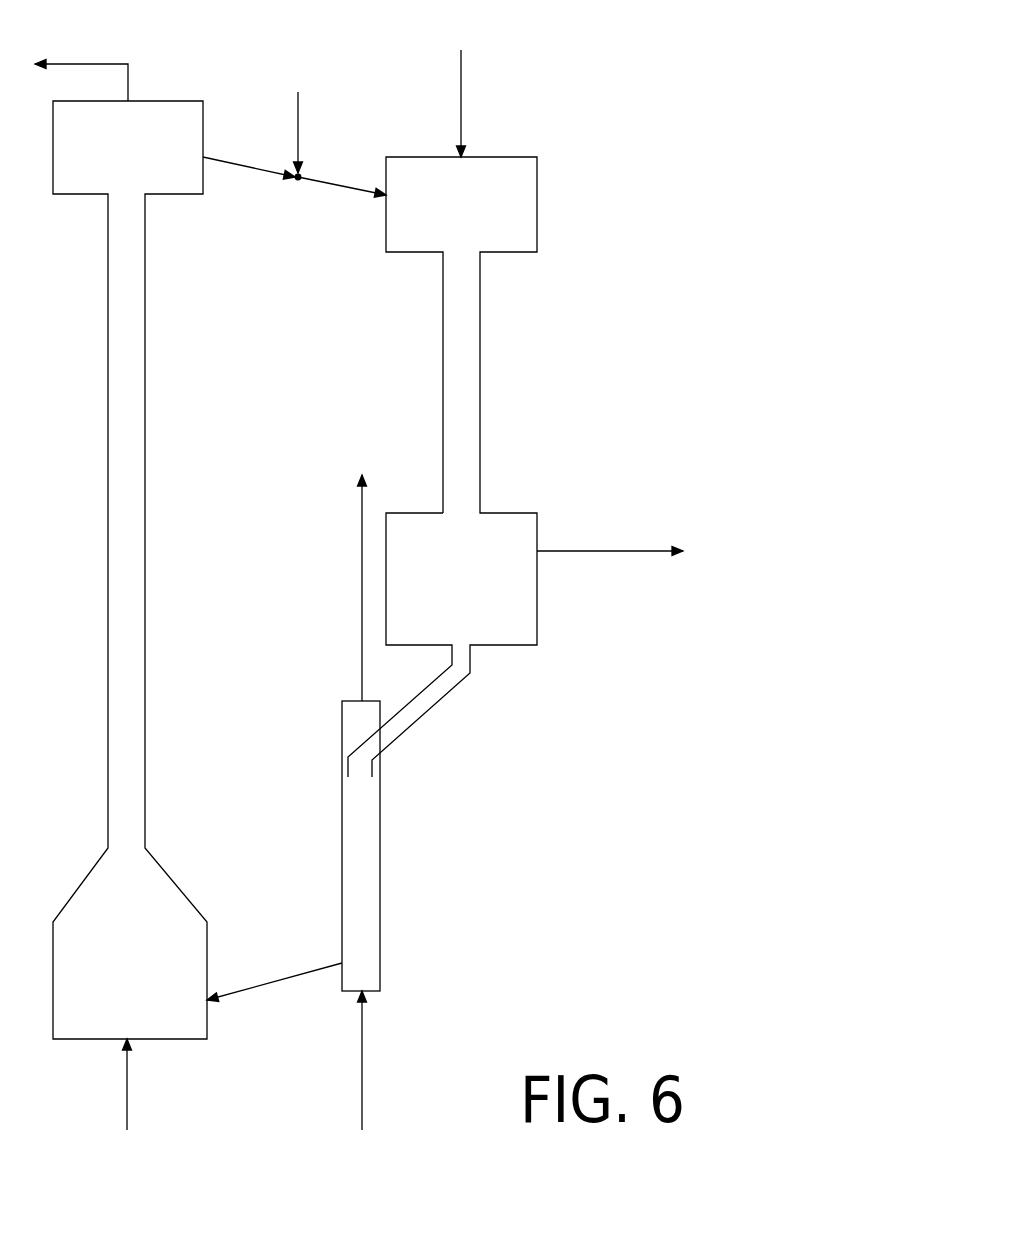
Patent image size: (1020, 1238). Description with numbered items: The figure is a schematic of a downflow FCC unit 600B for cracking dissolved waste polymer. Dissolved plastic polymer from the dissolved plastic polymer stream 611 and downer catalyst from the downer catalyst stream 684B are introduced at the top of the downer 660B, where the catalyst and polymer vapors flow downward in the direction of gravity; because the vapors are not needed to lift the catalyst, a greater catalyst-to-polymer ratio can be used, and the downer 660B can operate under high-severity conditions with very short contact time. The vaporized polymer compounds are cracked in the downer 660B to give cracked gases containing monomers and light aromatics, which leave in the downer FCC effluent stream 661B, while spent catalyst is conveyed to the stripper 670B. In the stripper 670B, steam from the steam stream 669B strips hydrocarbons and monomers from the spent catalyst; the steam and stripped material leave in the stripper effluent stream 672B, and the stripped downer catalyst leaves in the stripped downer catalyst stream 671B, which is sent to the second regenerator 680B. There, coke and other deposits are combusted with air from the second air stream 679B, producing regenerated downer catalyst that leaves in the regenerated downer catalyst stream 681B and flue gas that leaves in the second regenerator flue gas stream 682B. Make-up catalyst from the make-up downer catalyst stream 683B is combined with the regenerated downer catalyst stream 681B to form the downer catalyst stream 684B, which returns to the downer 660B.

The process system 600B is at (636, 88).
The dissolved plastic polymer stream 611 is at (462, 100).
The downer 660B is at (481, 331).
The downer FCC effluent stream 661B is at (627, 547).
The steam stream 669B is at (363, 1075).
The stripper 670B is at (381, 818).
The stripped downer catalyst stream 671B is at (272, 980).
The stripper effluent stream 672B is at (361, 572).
The second air stream 679B is at (128, 1088).
The second regenerator 680B is at (159, 982).
The regenerated downer catalyst stream 681B is at (233, 176).
The second regenerator flue gas stream 682B is at (130, 74).
The make-up downer catalyst stream 683B is at (299, 104).
The downer catalyst stream 684B is at (342, 190).